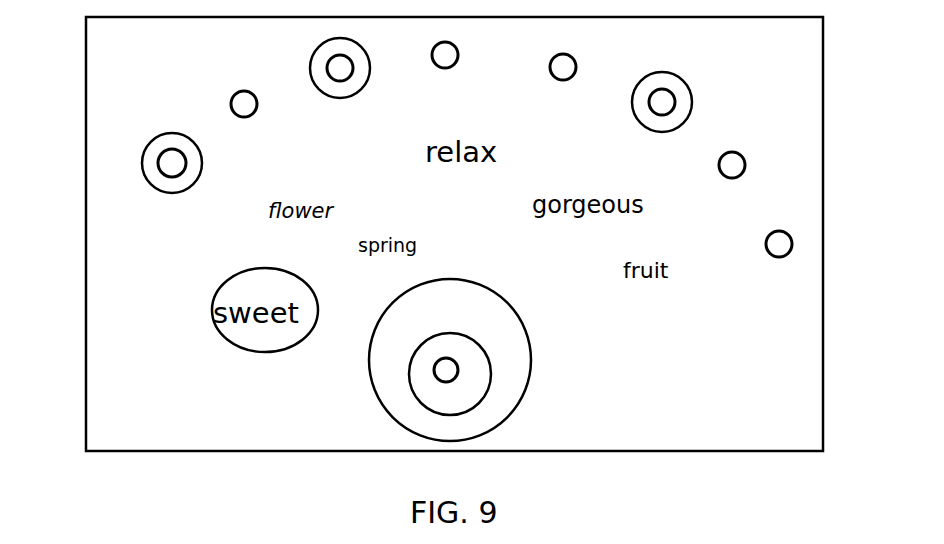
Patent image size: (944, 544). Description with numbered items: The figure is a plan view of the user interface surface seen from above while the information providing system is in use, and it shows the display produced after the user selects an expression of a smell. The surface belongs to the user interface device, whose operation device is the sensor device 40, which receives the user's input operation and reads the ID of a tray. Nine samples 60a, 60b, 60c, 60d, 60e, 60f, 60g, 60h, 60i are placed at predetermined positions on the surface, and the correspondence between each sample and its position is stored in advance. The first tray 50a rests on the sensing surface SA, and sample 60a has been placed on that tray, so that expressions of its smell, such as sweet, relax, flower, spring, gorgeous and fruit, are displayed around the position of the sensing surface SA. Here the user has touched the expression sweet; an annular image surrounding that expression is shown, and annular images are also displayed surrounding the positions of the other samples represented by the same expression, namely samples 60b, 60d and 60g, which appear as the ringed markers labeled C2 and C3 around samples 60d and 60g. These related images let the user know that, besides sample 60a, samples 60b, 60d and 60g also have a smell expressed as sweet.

The sensor device 40 is at (823, 110).
The first tray 50a is at (492, 380).
The sensing surface SA is at (507, 303).
The sample 60a is at (435, 366).
The sample 60b is at (158, 152).
The sample 60c is at (233, 98).
The sample 60d is at (328, 68).
The sample 60e is at (458, 53).
The sample 60f is at (576, 62).
The sample 60g is at (674, 97).
The sample 60h is at (744, 154).
The sample 60i is at (792, 240).
The cluster C2 is at (358, 93).
The cluster C3 is at (632, 105).